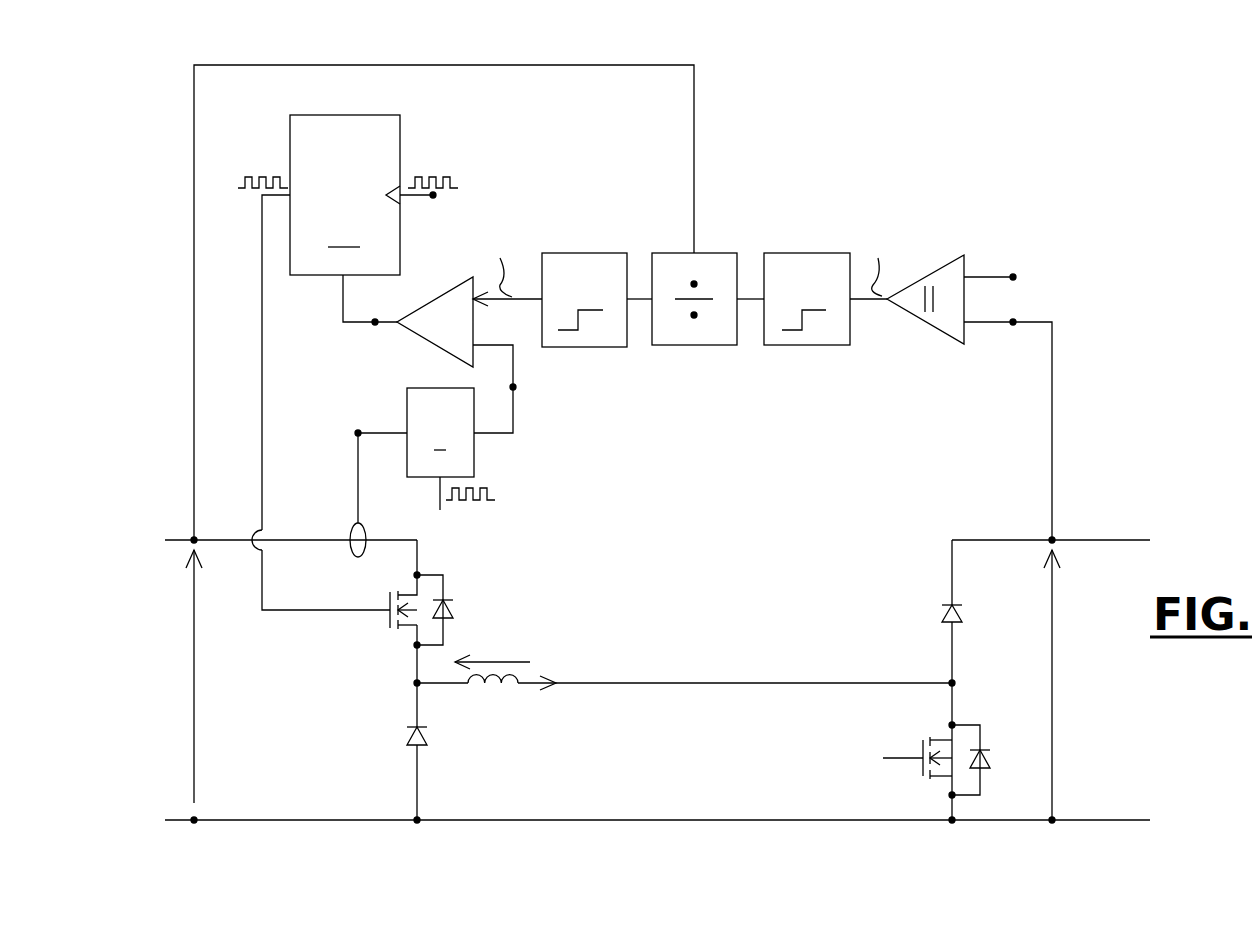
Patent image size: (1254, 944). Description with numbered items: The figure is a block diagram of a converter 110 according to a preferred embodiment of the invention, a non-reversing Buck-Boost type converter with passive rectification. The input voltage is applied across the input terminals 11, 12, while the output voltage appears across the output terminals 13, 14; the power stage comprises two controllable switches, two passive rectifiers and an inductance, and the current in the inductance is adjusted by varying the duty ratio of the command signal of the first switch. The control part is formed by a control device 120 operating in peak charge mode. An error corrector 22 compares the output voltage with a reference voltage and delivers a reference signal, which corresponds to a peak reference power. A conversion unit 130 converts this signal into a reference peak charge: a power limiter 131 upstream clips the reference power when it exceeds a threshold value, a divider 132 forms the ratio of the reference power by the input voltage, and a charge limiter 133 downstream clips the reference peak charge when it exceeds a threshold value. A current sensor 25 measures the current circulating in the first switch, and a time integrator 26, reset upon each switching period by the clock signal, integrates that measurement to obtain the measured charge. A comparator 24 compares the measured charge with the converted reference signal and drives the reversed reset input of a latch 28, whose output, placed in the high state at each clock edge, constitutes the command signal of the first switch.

The input terminal 11 is at (192, 538).
The input terminal 12 is at (194, 822).
The output terminal 13 is at (1054, 538).
The output terminal 14 is at (1052, 823).
The error corrector 22 is at (932, 275).
The comparator 24 is at (432, 297).
The current sensor 25 is at (352, 527).
The time integrator 26 is at (462, 462).
The latch 28 is at (398, 133).
The converter 110 is at (167, 693).
The control device 120 is at (145, 313).
The conversion unit 130 is at (800, 418).
The power limiter 131 is at (788, 345).
The divider 132 is at (683, 345).
The charge limiter 133 is at (605, 347).